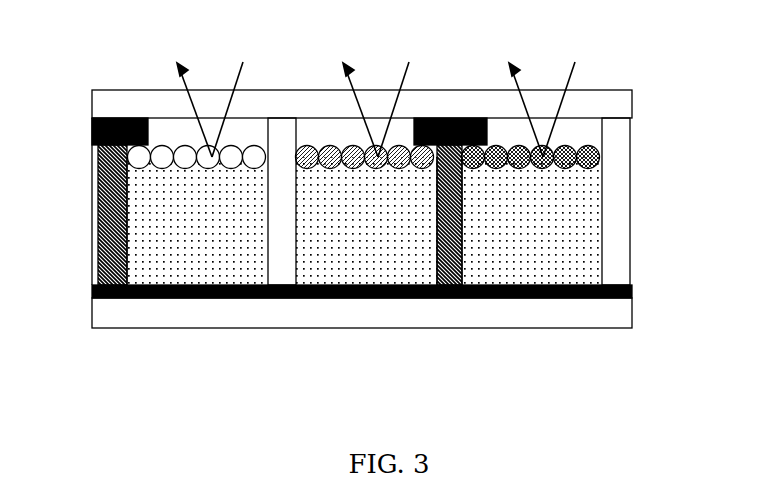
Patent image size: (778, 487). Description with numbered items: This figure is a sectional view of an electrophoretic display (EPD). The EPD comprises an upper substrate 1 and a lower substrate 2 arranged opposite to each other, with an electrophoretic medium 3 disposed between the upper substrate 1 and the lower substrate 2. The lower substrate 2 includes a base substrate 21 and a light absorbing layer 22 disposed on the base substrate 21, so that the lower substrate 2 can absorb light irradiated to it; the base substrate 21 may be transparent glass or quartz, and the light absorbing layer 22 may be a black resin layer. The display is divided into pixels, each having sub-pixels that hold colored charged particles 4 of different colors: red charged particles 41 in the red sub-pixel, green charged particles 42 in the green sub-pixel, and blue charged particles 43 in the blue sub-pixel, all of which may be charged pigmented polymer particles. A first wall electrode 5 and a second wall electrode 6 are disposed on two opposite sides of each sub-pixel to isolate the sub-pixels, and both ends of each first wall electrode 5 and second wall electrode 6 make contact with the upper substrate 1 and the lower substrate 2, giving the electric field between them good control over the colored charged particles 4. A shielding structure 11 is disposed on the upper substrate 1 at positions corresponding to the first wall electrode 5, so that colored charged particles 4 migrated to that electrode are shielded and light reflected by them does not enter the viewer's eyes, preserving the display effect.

The upper substrate 1 is at (605, 104).
The lower substrate 2 is at (406, 305).
The base substrate 21 is at (612, 318).
The light absorbing layer 22 is at (632, 291).
The electrophoretic medium 3 is at (592, 214).
The colored charged particles 4 is at (364, 287).
The red charged particles 41 is at (137, 158).
The green charged particles 42 is at (304, 158).
The blue charged particles 43 is at (531, 262).
The first wall electrode 5 is at (100, 185).
The second wall electrode 6 is at (615, 162).
The shielding structure 11 is at (92, 133).